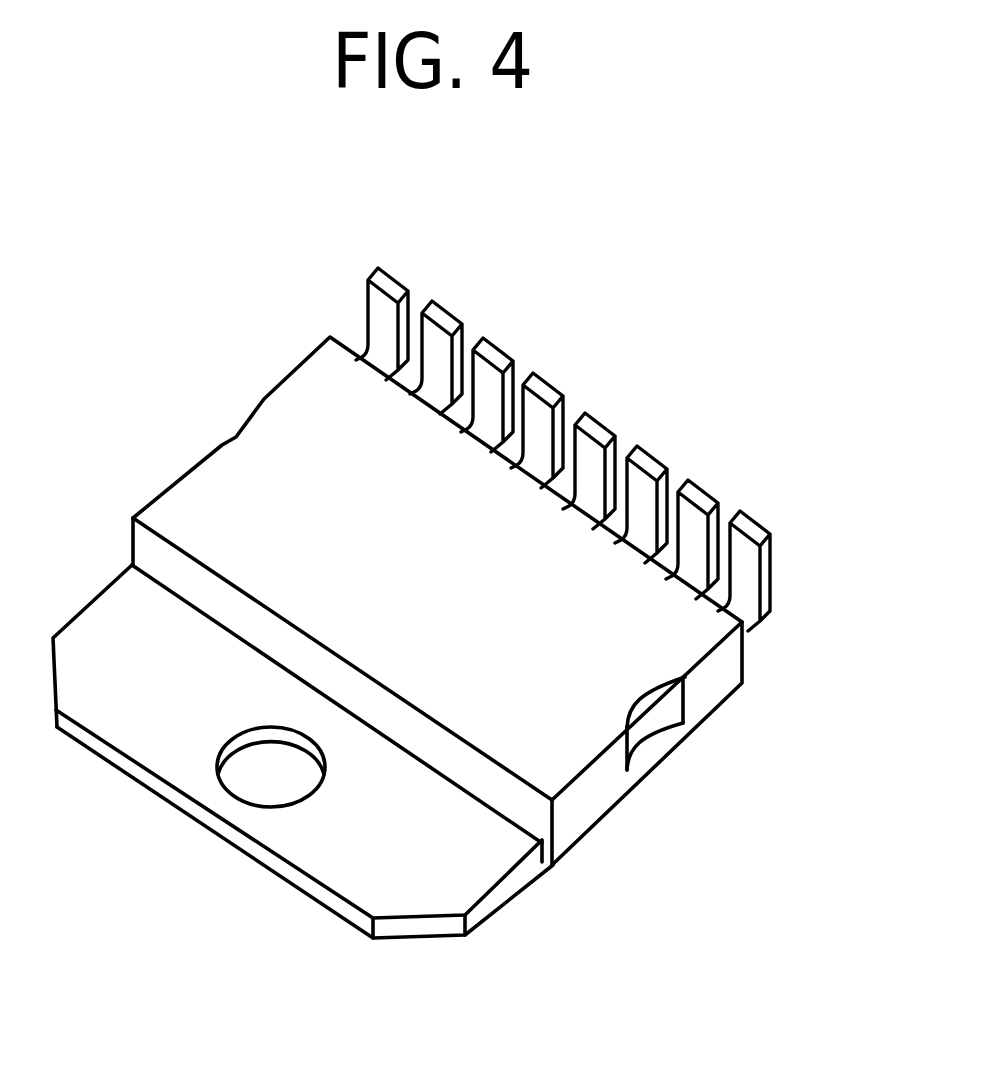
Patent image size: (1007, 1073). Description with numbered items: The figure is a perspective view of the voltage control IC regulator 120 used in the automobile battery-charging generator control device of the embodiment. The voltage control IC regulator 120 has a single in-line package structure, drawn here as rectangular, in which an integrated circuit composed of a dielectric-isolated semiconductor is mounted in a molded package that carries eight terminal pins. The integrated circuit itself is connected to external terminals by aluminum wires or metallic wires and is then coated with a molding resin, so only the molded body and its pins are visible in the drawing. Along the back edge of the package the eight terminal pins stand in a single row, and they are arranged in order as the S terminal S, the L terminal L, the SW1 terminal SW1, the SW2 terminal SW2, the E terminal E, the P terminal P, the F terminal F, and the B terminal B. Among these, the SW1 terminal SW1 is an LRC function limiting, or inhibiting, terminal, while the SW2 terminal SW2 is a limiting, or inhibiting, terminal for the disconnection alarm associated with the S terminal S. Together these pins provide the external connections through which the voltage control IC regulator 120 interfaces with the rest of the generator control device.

The voltage control IC regulator 120 is at (588, 808).
The S terminal S is at (387, 270).
The L terminal L is at (448, 302).
The SW1 terminal SW1 is at (492, 340).
The SW2 terminal SW2 is at (538, 376).
The E terminal E is at (600, 412).
The P terminal P is at (655, 446).
The F terminal F is at (703, 481).
The B terminal B is at (753, 515).